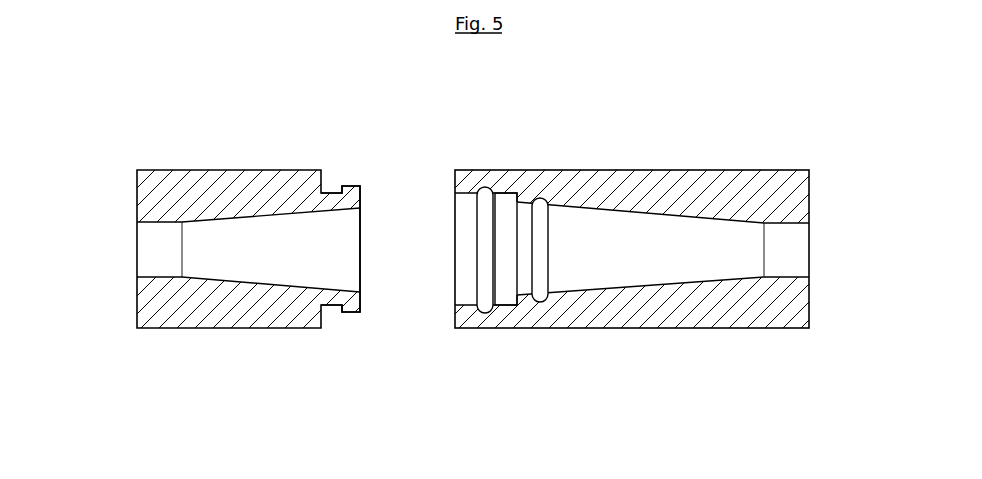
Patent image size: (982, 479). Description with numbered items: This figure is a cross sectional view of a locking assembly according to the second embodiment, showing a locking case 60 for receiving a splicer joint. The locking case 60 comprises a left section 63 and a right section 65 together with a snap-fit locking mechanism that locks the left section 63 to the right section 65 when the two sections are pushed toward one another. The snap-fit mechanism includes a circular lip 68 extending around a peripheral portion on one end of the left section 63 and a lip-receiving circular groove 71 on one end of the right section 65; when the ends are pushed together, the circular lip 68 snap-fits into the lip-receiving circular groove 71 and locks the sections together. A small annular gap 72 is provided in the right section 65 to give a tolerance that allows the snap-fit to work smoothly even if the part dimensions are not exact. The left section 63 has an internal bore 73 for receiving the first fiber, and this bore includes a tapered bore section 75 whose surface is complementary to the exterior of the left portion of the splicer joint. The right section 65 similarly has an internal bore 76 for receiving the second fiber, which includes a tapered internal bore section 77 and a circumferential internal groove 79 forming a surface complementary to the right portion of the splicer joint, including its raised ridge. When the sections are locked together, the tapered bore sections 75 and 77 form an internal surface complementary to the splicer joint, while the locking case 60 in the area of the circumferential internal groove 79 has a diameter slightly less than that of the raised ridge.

The locking case 60 is at (513, 98).
The left section 63 is at (138, 170).
The right section 65 is at (805, 170).
The circular lip 68 is at (353, 187).
The lip-receiving circular groove 71 is at (487, 195).
The annular gap 72 is at (505, 203).
The internal bore 73 is at (129, 245).
The tapered bore section 75 is at (340, 245).
The internal bore 76 is at (812, 246).
The tapered internal bore section 77 is at (677, 257).
The circumferential internal groove 79 is at (540, 207).